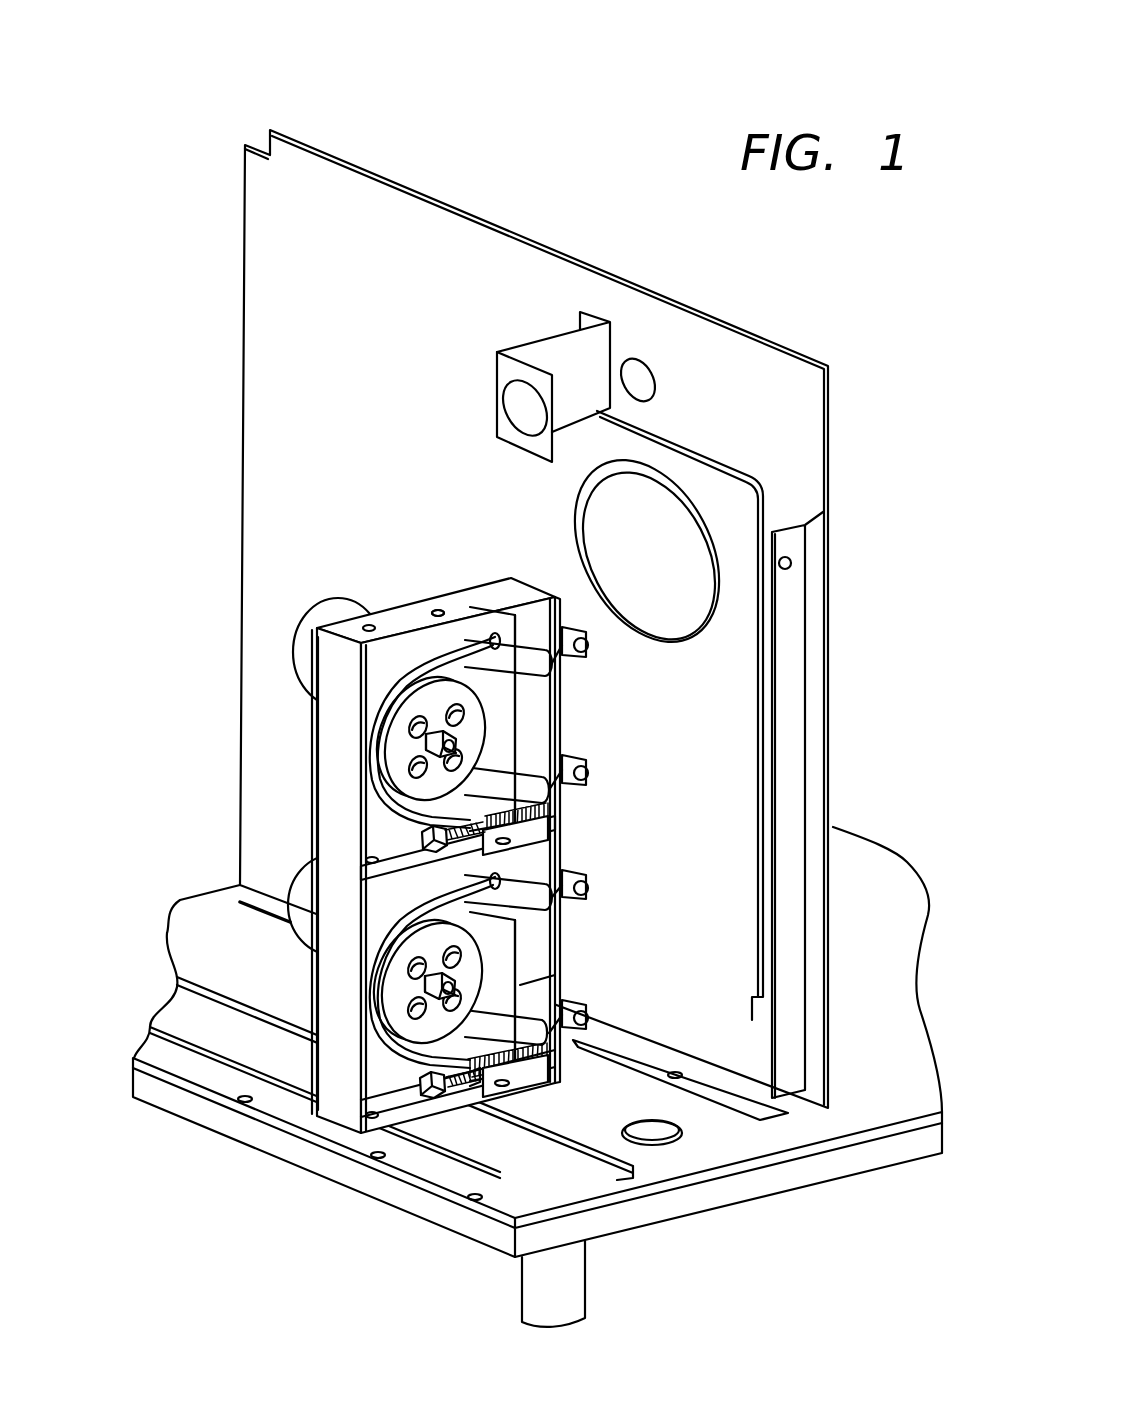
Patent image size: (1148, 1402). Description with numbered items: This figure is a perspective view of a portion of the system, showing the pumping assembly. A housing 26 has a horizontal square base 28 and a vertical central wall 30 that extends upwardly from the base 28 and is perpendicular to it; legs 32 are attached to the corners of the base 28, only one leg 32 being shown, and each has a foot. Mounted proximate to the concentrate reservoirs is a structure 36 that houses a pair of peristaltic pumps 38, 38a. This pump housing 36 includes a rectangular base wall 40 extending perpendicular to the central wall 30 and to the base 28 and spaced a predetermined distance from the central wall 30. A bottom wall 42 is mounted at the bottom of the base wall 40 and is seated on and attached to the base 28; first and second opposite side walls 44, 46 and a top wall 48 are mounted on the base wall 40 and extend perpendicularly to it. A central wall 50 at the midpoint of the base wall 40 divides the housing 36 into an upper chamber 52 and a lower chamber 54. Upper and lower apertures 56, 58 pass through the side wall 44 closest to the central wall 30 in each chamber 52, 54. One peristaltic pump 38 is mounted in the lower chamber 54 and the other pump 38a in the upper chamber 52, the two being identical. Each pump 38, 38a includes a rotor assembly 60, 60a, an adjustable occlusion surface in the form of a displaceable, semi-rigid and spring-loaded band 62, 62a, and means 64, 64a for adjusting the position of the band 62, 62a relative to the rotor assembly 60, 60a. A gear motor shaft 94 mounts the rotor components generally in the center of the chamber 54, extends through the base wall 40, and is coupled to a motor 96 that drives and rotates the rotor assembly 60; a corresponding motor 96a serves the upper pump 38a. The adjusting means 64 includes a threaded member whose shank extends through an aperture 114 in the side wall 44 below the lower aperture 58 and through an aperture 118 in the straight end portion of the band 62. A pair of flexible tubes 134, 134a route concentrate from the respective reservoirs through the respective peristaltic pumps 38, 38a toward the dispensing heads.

The housing 26 is at (335, 128).
The base 28 is at (697, 1157).
The central wall 30 is at (378, 230).
The leg 32 is at (512, 1283).
The structure 36 is at (400, 665).
The peristaltic pump 38 is at (515, 960).
The peristaltic pump 38a is at (510, 725).
The base wall 40 is at (378, 1068).
The bottom wall 42 is at (410, 1110).
The first side wall 44 is at (520, 985).
The second side wall 46 is at (325, 988).
The top wall 48 is at (472, 602).
The central wall 50 is at (440, 875).
The upper chamber 52 is at (530, 707).
The lower chamber 54 is at (515, 945).
The upper aperture 56 is at (536, 638).
The lower aperture 58 is at (530, 808).
The rotor assembly 60 is at (486, 992).
The rotor assembly 60a is at (486, 751).
The band 62 is at (357, 917).
The band 62a is at (400, 665).
The adjusting means 64 is at (420, 1082).
The adjusting means 64a is at (425, 830).
The gear motor shaft 94 is at (440, 1003).
The motor 96 is at (293, 897).
The motor 96a is at (302, 648).
The aperture 114 is at (548, 1045).
The aperture 118 is at (463, 1100).
The flexible tube 134 is at (583, 885).
The flexible tube 134a is at (540, 664).